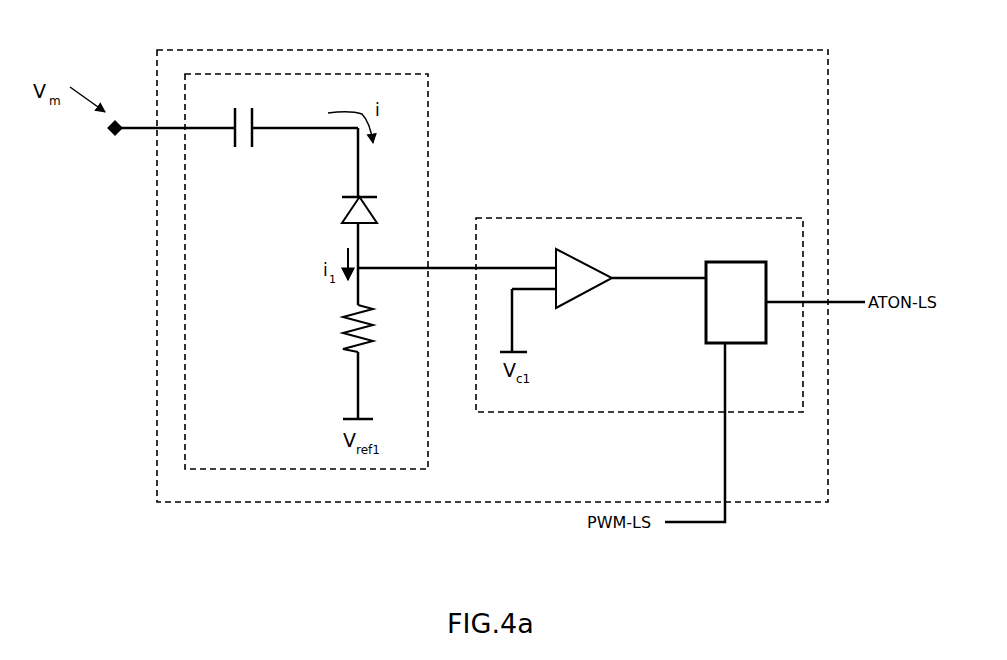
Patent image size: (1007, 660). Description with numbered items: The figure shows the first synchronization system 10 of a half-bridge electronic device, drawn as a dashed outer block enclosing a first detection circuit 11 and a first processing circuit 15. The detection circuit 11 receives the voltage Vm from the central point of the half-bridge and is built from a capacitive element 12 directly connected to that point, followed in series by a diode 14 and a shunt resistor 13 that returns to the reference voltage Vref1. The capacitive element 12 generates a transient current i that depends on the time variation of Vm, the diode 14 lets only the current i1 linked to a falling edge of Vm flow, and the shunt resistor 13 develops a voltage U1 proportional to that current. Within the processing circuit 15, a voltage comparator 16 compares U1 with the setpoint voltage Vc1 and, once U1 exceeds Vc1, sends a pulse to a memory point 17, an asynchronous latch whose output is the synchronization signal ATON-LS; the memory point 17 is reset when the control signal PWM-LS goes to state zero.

The first synchronization system 10 is at (492, 50).
The first detection circuit 11 is at (185, 280).
The capacitive element 12 is at (236, 152).
The shunt resistor 13 is at (347, 330).
The diode 14 is at (350, 208).
The first processing circuit 15 is at (578, 217).
The voltage comparator 16 is at (583, 293).
The memory point 17 is at (706, 302).